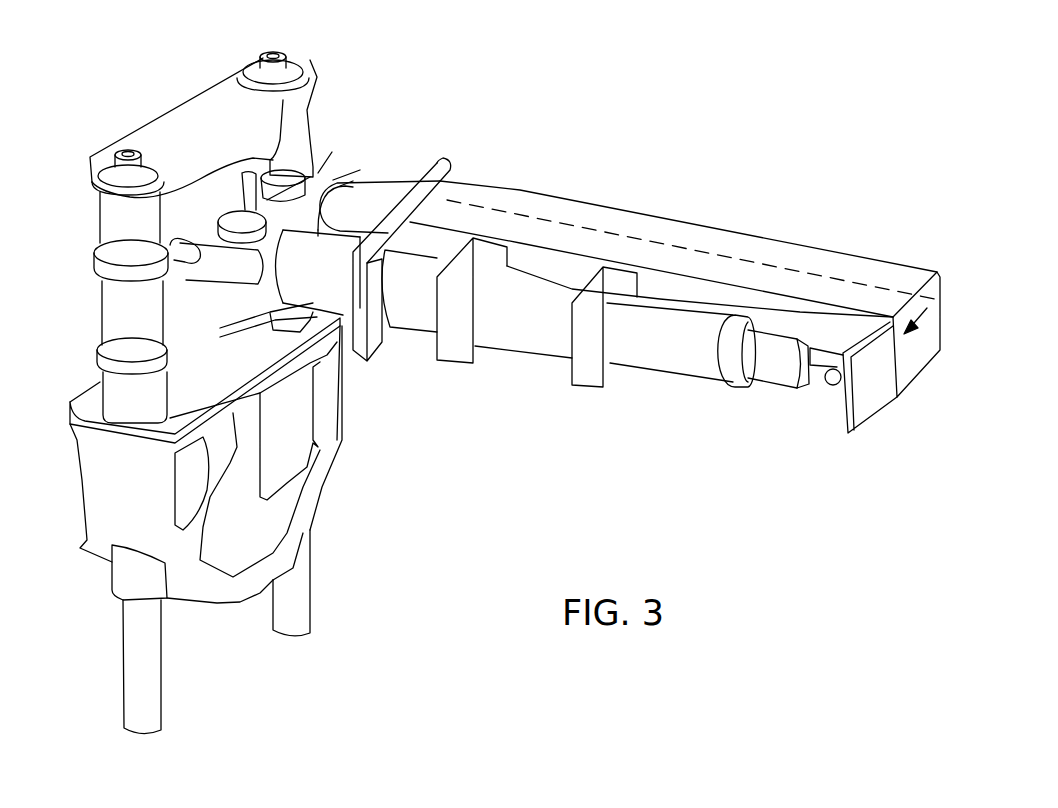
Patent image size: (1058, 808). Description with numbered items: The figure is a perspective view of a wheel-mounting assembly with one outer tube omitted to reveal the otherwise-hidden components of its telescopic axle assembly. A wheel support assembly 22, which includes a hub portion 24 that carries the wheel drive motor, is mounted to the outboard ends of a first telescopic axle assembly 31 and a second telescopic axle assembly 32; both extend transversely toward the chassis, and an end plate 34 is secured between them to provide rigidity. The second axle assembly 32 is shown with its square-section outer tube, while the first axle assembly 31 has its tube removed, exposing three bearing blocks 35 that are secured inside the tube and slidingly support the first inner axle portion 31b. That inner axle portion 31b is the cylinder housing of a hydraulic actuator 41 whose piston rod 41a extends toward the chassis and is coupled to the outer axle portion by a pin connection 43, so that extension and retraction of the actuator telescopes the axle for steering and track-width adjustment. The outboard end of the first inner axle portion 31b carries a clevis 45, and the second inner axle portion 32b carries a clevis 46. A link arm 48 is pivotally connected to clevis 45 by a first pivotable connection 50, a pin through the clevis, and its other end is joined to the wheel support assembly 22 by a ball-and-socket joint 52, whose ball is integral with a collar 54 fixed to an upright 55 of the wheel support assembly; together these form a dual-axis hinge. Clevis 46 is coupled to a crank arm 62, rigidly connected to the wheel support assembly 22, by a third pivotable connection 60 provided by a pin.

The wheel support assembly 22 is at (114, 320).
The hub portion 24 is at (107, 538).
The first telescopic axle assembly 31 is at (527, 372).
The first inner axle portion 31b is at (335, 290).
The second telescopic axle assembly 32 is at (677, 220).
The second inner axle portion 32b is at (377, 202).
The end plate 34 is at (453, 167).
The bearing blocks 35 is at (388, 328).
The first hydraulic actuator 41 is at (698, 385).
The piston rod 41a is at (778, 388).
The pin connection 43 is at (837, 390).
The clevis 45 is at (270, 283).
The clevis 46 is at (377, 204).
The link arm 48 is at (218, 262).
The first pivotable connection 50 is at (230, 217).
The ball-and-socket joint 52 is at (180, 225).
The collar 54 is at (98, 273).
The upright 55 is at (112, 223).
The third pivotable connection 60 is at (267, 177).
The crank arm 62 is at (317, 175).